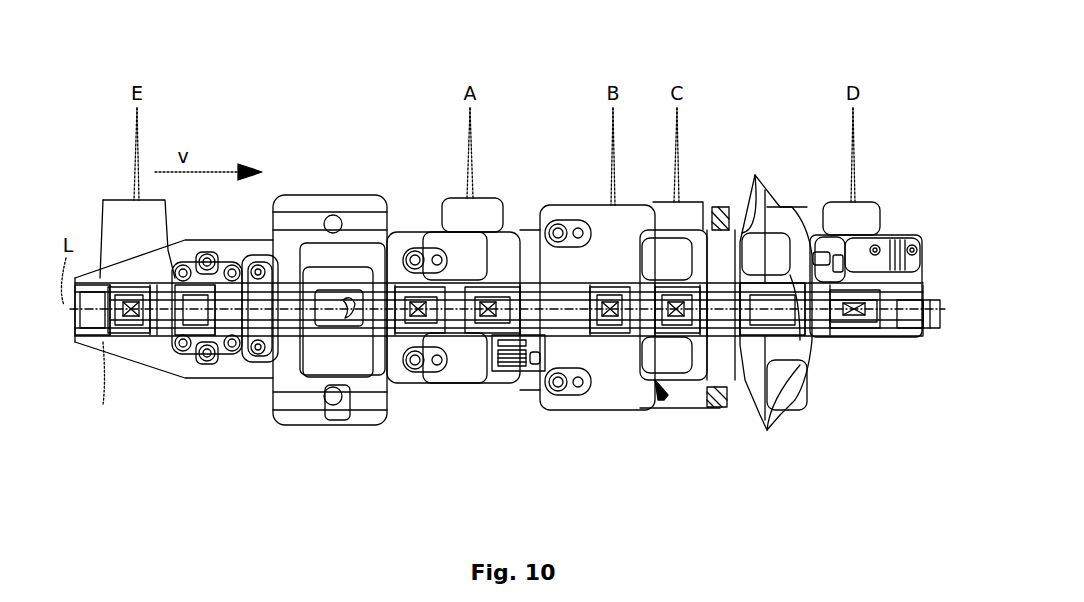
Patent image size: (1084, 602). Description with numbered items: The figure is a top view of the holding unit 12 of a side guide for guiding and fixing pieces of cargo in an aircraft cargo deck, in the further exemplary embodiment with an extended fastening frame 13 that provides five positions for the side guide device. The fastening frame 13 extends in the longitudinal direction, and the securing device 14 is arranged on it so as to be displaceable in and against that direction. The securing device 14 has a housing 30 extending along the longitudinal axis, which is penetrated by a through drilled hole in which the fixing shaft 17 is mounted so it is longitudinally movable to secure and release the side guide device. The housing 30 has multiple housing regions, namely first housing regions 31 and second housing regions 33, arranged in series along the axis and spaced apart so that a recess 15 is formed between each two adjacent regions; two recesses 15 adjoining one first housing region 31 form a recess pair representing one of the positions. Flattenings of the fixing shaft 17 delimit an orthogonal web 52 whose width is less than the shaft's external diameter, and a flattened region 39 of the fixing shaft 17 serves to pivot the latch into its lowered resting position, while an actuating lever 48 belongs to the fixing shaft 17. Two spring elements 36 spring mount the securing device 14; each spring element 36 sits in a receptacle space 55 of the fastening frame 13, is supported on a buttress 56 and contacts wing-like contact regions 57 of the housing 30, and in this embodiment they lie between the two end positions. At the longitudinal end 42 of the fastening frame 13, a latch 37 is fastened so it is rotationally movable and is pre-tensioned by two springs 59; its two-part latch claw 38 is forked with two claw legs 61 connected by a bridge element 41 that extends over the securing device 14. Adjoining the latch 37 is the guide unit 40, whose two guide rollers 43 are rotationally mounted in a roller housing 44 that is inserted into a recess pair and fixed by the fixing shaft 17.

The holding unit 12 is at (232, 118).
The fastening frame 13 is at (393, 425).
The securing device 14 is at (916, 180).
The recesses 15 is at (423, 180).
The fixing shaft 17 is at (885, 395).
The housing 30 is at (400, 182).
The first housing region 31 is at (145, 400).
The second housing region 33 is at (102, 340).
The spring element 36 is at (327, 182).
The latch 37 is at (740, 180).
The two-part latch claw 38 is at (756, 180).
The flattened region 39 is at (768, 180).
The guide unit 40 is at (692, 400).
The bridge element 41 is at (766, 420).
The longitudinal end 42 is at (938, 300).
The guide roller 43 is at (640, 400).
The roller housing 44 is at (652, 400).
The actuating lever 48 is at (330, 380).
The orthogonal web 52 is at (470, 345).
The receptacle space 55 is at (345, 420).
The buttress 56 is at (288, 195).
The wing-like contact regions 57 is at (372, 182).
The springs 59 is at (708, 200).
The claw legs 61 is at (790, 420).